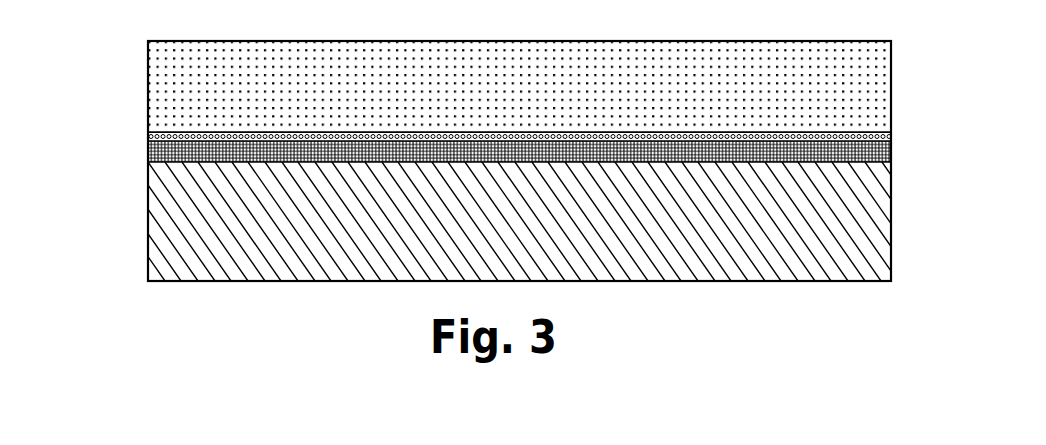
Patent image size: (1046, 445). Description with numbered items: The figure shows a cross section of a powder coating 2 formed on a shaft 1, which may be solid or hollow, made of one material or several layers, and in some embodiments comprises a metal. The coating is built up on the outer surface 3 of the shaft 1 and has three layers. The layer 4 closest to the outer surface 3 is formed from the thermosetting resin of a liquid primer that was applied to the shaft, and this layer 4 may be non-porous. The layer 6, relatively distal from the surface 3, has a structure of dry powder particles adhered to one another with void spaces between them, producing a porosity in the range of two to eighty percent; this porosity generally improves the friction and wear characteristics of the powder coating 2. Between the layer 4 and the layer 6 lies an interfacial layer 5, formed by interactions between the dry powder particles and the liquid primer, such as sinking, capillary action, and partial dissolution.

The shaft 1 is at (877, 228).
The powder coating 2 is at (129, 144).
The outer surface 3 is at (182, 156).
The layer 4 is at (889, 153).
The interfacial layer 5 is at (891, 137).
The layer 6 is at (886, 108).